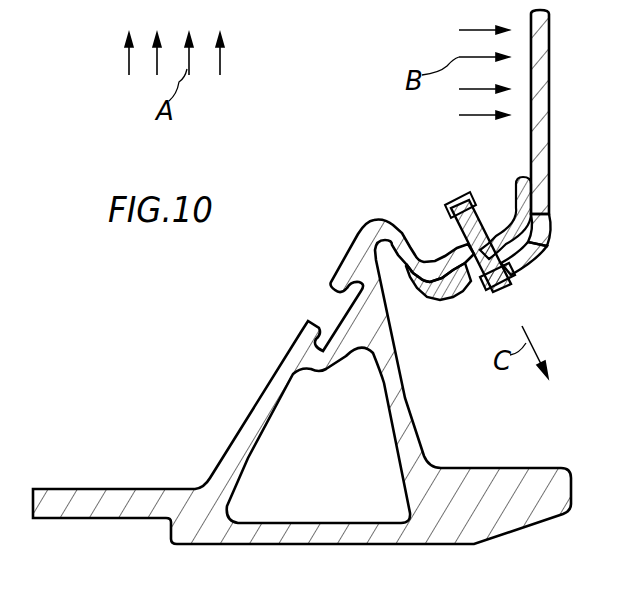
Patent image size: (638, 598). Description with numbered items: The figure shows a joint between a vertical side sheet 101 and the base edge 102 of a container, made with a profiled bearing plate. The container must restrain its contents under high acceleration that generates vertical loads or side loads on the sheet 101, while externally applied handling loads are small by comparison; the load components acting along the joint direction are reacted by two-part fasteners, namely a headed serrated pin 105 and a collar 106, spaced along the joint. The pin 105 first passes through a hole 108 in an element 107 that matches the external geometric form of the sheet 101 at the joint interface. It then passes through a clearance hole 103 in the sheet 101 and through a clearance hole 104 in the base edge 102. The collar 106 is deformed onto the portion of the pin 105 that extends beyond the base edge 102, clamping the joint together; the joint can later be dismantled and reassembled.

The vertical side sheet 101 is at (541, 91).
The base edge 102 is at (405, 403).
The clearance hole 103 is at (440, 293).
The clearance hole 104 is at (445, 238).
The headed serrated pin 105 is at (487, 287).
The collar 106 is at (481, 200).
The element 107 is at (543, 226).
The hole 108 is at (511, 260).